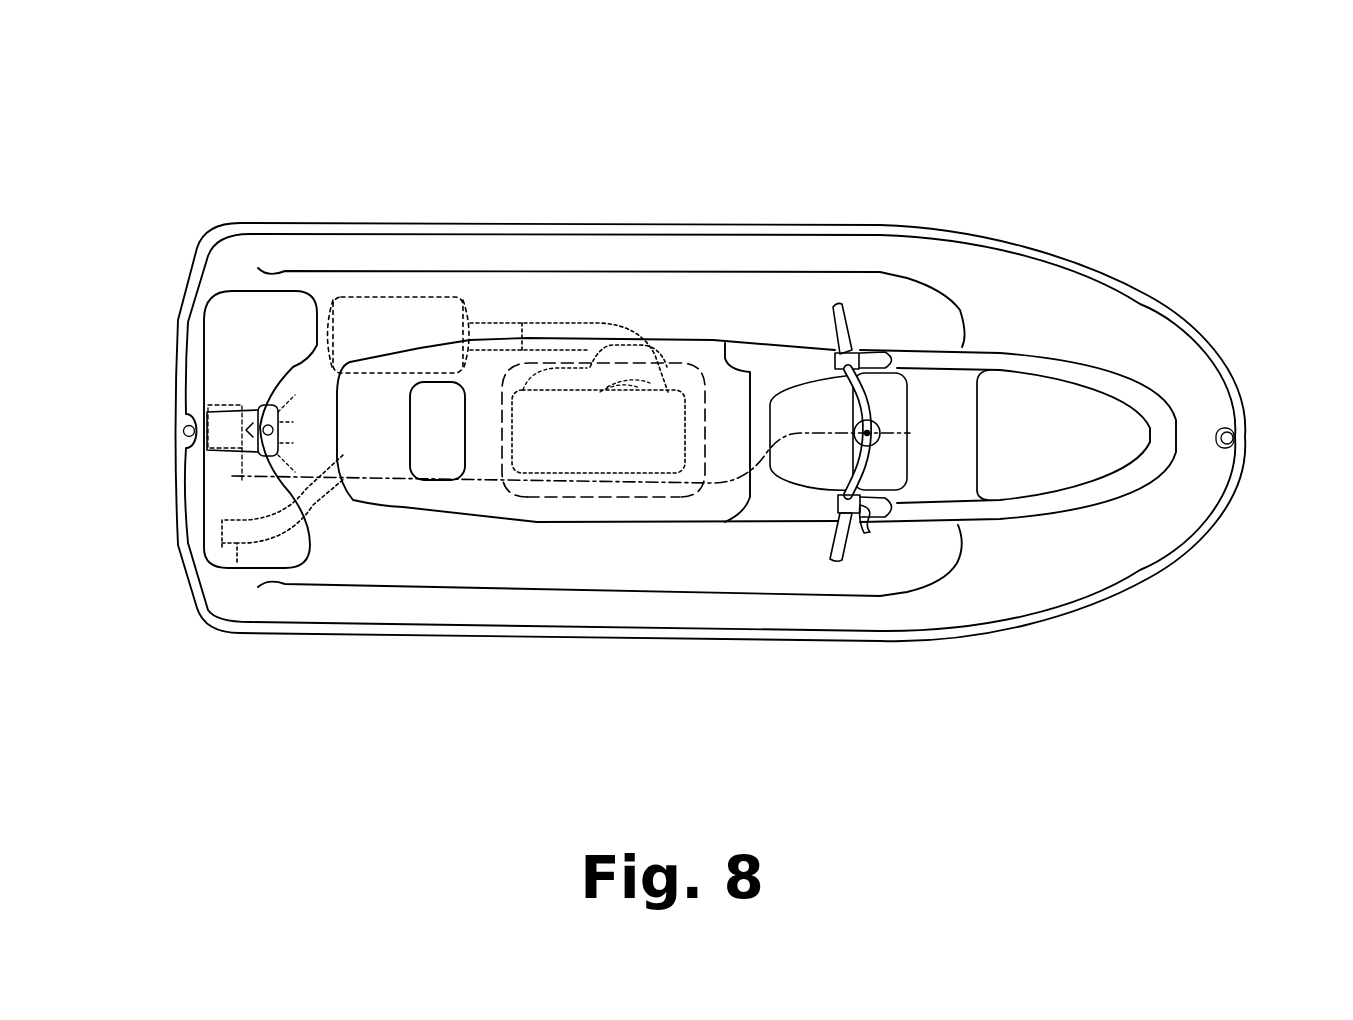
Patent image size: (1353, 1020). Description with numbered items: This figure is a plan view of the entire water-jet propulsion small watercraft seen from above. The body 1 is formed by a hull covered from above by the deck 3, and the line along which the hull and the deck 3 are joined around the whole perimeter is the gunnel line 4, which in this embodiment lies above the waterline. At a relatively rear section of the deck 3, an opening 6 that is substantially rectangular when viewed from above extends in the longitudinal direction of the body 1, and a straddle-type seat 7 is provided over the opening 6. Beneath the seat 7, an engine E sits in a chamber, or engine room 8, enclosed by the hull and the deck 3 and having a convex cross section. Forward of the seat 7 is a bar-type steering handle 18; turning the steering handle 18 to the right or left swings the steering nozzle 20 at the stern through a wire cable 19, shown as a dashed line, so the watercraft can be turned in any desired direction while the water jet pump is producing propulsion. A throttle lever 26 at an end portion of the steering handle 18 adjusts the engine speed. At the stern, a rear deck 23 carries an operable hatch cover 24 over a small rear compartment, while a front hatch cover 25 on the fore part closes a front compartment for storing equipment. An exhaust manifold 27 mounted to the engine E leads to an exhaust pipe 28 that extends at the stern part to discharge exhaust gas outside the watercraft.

The body 1 is at (1162, 345).
The deck 3 is at (1025, 310).
The gunnel line 4 is at (1227, 508).
The opening 6 is at (692, 347).
The straddle-type seat 7 is at (385, 447).
The chamber (engine room) 8 is at (658, 490).
The bar-type steering handle 18 is at (862, 305).
The wire cable 19 is at (483, 483).
The steering nozzle 20 is at (235, 473).
The rear deck 23 is at (237, 343).
The hatch cover 24 is at (232, 500).
The front hatch cover 25 is at (1065, 462).
The throttle lever 26 is at (865, 532).
The exhaust manifold 27 is at (600, 325).
The exhaust pipe 28 is at (492, 325).
The engine E is at (610, 437).